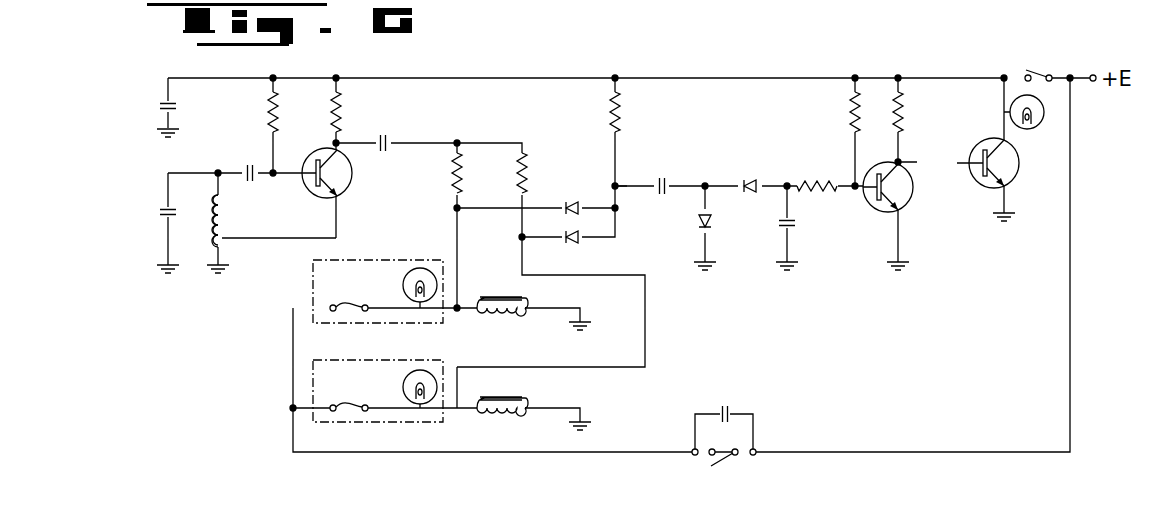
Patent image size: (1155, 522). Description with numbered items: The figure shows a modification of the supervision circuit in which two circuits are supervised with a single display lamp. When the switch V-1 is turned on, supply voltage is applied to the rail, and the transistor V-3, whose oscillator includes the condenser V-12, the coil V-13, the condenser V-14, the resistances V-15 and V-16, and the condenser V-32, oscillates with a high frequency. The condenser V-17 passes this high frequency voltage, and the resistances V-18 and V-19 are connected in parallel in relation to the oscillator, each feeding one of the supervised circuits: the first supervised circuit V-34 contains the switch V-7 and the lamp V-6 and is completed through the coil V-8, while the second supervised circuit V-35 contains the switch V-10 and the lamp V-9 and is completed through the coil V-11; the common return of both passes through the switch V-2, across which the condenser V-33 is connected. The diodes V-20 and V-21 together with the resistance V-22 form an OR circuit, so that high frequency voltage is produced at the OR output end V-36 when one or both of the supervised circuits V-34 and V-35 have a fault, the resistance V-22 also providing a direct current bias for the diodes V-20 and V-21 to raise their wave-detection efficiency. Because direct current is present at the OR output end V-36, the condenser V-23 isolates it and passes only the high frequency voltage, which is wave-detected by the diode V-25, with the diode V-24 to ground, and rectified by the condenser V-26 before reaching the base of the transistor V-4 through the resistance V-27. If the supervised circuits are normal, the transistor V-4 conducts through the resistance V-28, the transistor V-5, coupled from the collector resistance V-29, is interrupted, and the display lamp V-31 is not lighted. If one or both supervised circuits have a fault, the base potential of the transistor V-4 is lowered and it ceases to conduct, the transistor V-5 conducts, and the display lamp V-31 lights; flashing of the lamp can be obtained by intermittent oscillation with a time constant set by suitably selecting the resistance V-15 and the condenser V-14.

The switch V-1 is at (1037, 68).
The switch V-2 is at (722, 464).
The transistor V-3 is at (351, 191).
The transistor V-4 is at (905, 206).
The transistor V-5 is at (1010, 166).
The lamp V-6 is at (420, 268).
The switch V-7 is at (350, 306).
The relay coil V-8 is at (493, 297).
The lamp V-9 is at (422, 370).
The switch V-10 is at (354, 405).
The relay coil V-11 is at (496, 399).
The condenser V-12 is at (160, 212).
The coil V-13 is at (222, 224).
The condenser V-14 is at (246, 164).
The resistance V-15 is at (266, 107).
The resistance V-16 is at (342, 113).
The condenser V-17 is at (390, 125).
The resistance V-18 is at (452, 172).
The resistance V-19 is at (526, 169).
The diode V-20 is at (574, 204).
The diode V-21 is at (574, 243).
The resistance V-22 is at (620, 108).
The condenser V-23 is at (662, 176).
The diode V-24 is at (698, 222).
The diode V-25 is at (751, 178).
The condenser V-26 is at (780, 224).
The resistance V-27 is at (818, 196).
The resistance V-28 is at (848, 114).
The resistance V-29 is at (906, 114).
The display lamp V-31 is at (1040, 116).
The condenser V-32 is at (158, 110).
The condenser V-33 is at (726, 406).
The supervised circuit V-34 is at (313, 272).
The supervised circuit V-35 is at (313, 372).
The OR output end V-36 is at (614, 184).